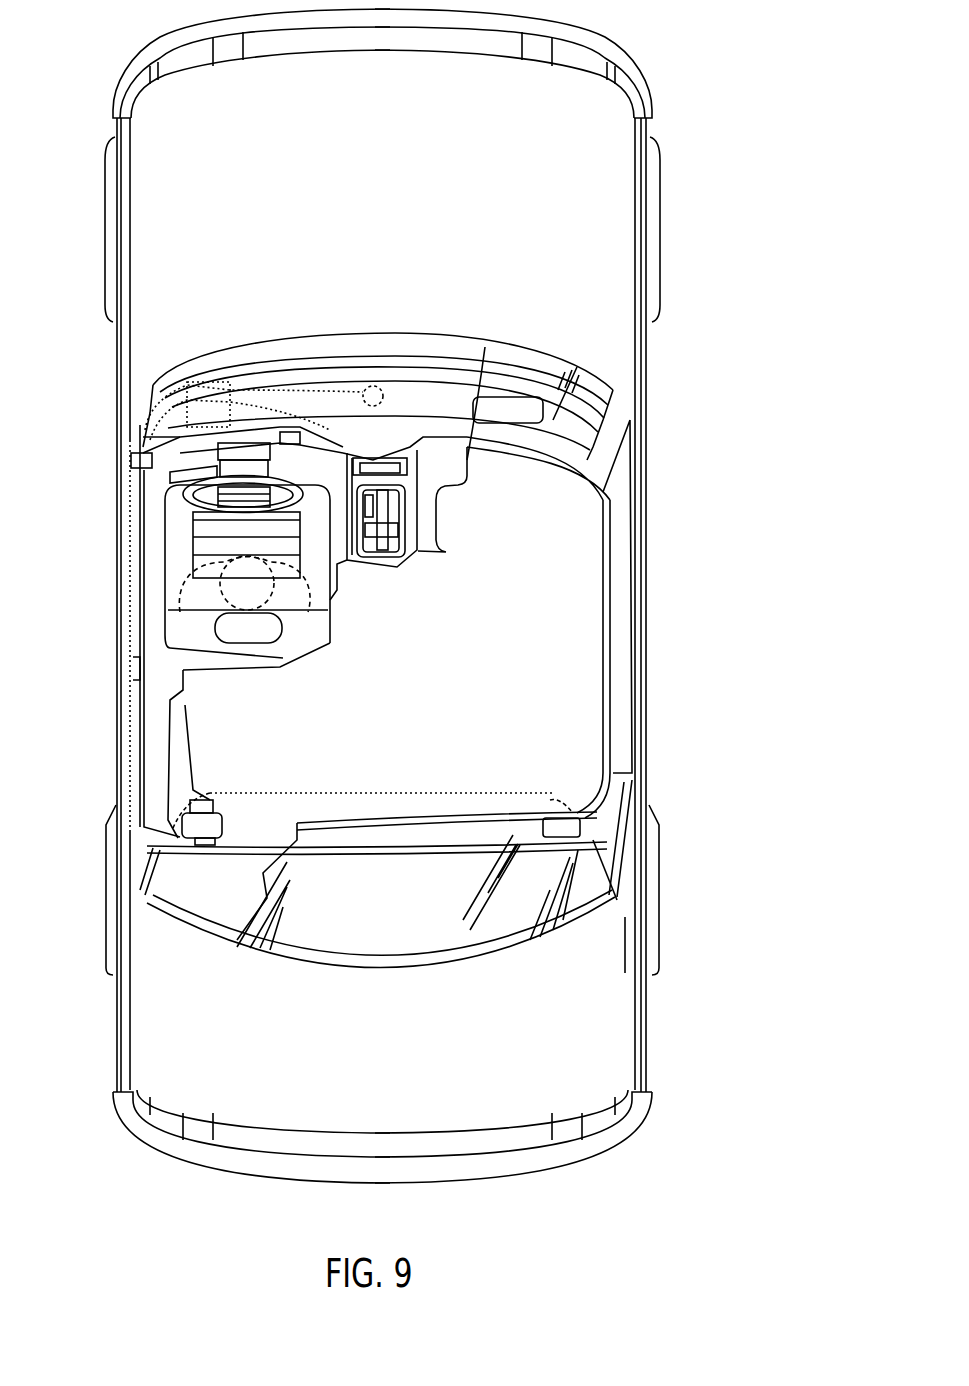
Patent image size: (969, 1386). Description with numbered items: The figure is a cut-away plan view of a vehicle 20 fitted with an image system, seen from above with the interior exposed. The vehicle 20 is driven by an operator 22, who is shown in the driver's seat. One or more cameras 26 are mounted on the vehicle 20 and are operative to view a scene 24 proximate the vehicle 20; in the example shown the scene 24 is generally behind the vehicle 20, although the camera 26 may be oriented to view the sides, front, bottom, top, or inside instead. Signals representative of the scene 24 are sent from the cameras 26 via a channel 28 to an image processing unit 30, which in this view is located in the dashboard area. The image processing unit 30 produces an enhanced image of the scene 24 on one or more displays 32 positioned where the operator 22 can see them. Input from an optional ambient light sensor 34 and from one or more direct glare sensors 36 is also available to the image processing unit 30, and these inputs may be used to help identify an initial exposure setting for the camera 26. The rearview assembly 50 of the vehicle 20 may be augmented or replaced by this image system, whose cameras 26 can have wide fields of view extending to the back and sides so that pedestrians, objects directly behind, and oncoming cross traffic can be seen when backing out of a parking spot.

The vehicle 20 is at (683, 402).
The operator 22 is at (190, 583).
The scene 24 is at (188, 1282).
The camera 26 is at (197, 828).
The channel 28 is at (160, 823).
The image processing unit 30 is at (187, 378).
The display 32 is at (162, 443).
The ambient light sensor 34 is at (378, 385).
The direct glare sensor 36 is at (137, 463).
The rearview assembly 50 is at (340, 443).